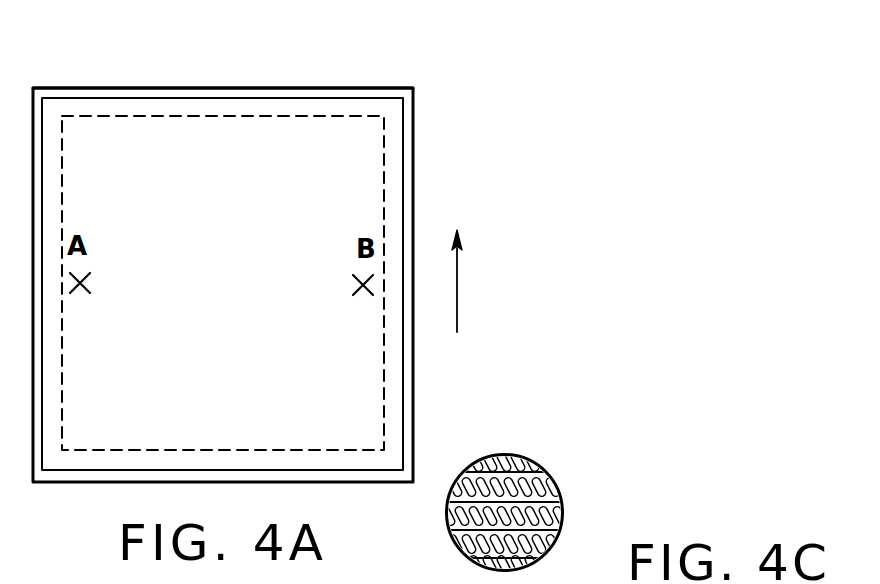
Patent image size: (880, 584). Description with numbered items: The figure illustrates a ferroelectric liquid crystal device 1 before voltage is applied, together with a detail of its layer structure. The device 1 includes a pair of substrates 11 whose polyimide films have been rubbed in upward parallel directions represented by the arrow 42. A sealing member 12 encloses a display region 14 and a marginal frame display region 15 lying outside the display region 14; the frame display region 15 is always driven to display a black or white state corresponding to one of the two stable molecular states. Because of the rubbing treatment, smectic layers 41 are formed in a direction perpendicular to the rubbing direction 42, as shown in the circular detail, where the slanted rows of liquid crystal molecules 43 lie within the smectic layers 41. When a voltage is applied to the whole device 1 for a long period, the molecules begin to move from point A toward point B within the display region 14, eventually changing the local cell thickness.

In FIG. 4A, the liquid crystal device 1 is at (207, 88).
In FIG. 4A, the substrates 11 is at (328, 94).
In FIG. 4A, the sealing member 12 is at (403, 126).
In FIG. 4A, the display region 14 is at (360, 200).
In FIG. 4A, the frame display region 15 is at (392, 170).
In FIG. 4C, the smectic layers 41 is at (555, 516).
In FIG. 4A, the rubbing direction 42 is at (457, 293).
In FIG. 4C, the slots 43 is at (542, 483).